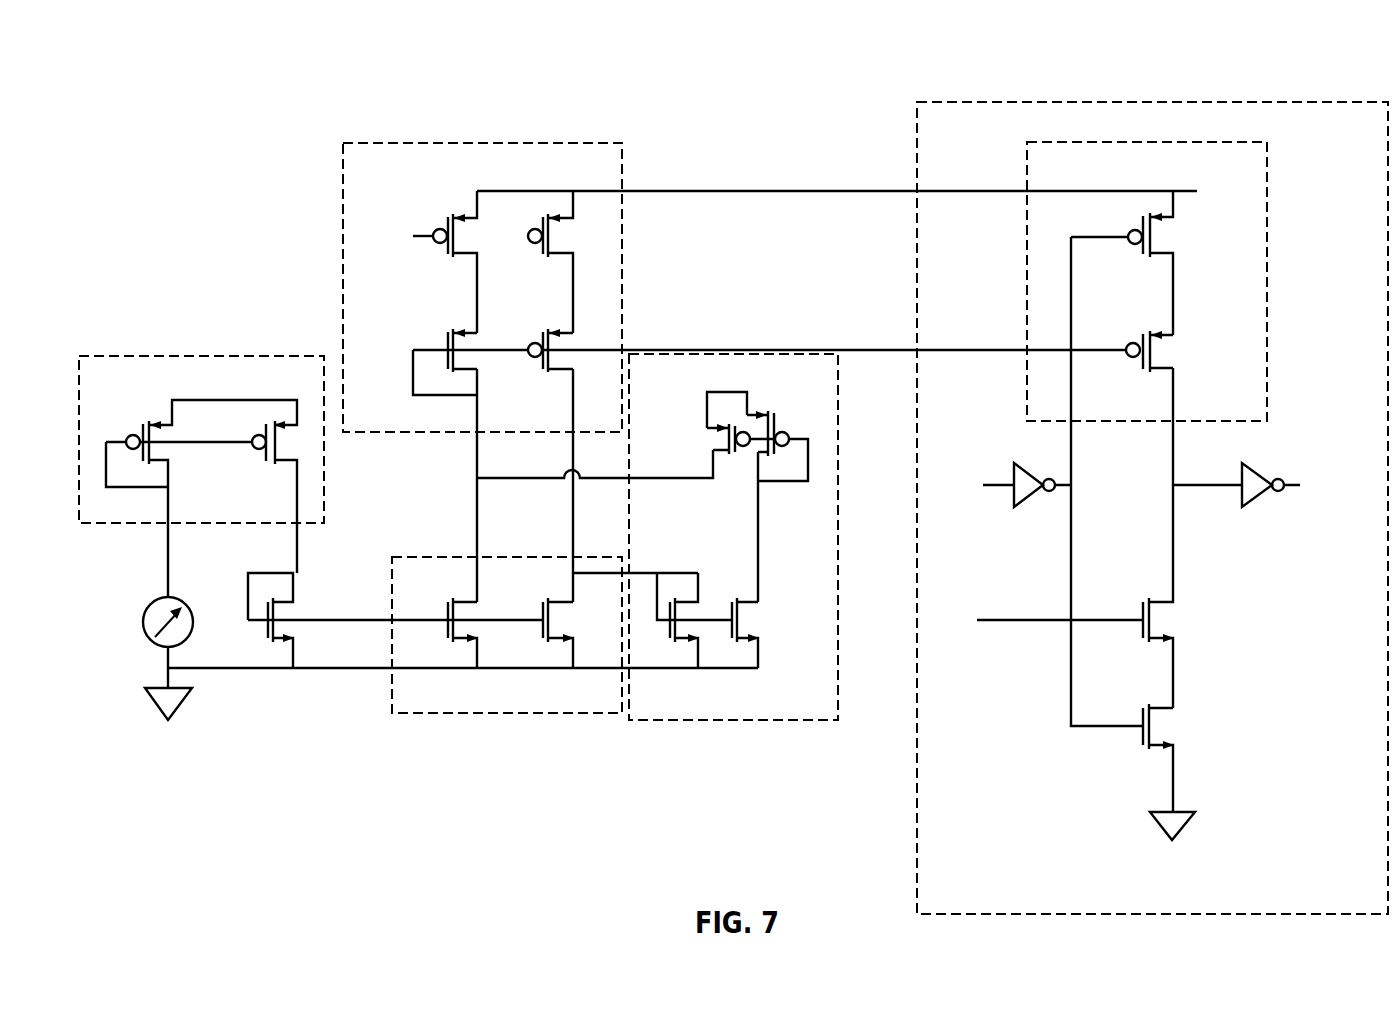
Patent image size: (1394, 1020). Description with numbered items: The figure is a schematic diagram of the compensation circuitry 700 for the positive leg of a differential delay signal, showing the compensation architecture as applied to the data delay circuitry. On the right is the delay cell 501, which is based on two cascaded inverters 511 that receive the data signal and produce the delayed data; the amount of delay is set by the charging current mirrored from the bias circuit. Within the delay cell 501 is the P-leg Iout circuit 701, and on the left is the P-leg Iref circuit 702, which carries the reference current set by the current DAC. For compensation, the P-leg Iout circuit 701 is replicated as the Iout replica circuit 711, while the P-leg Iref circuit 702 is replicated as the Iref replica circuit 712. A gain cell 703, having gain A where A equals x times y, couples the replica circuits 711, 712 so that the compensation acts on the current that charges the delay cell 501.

The compensation circuitry for the positive leg 700 is at (184, 52).
The P-leg Iref circuit 702 is at (146, 356).
The Iout replica circuit 711 is at (418, 142).
The Iref replica circuit 712 is at (455, 557).
The gain cell 703 is at (775, 720).
The delay cell 501 is at (1000, 102).
The P-leg Iout circuit 701 is at (1105, 142).
The inverters 511 is at (1031, 501).